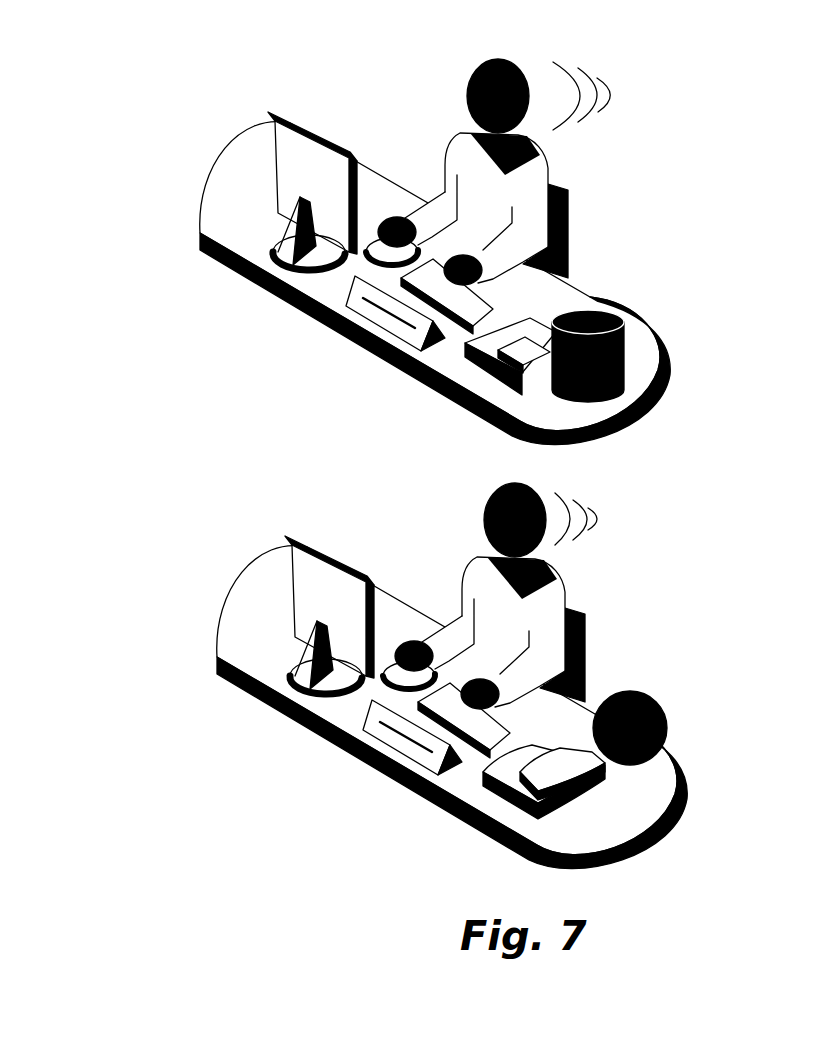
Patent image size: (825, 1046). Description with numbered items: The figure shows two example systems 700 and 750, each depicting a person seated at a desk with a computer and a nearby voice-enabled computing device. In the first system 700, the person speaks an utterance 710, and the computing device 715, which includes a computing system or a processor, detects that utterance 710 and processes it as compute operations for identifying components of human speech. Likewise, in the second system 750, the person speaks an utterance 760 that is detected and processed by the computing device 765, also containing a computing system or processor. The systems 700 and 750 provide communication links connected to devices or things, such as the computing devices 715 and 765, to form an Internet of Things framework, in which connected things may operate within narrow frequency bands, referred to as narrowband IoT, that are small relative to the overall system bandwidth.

The system 700 is at (418, 243).
The utterance 710 is at (612, 98).
The computing device 715 is at (625, 385).
The system 750 is at (422, 645).
The utterance 760 is at (593, 513).
The computing device 765 is at (667, 732).